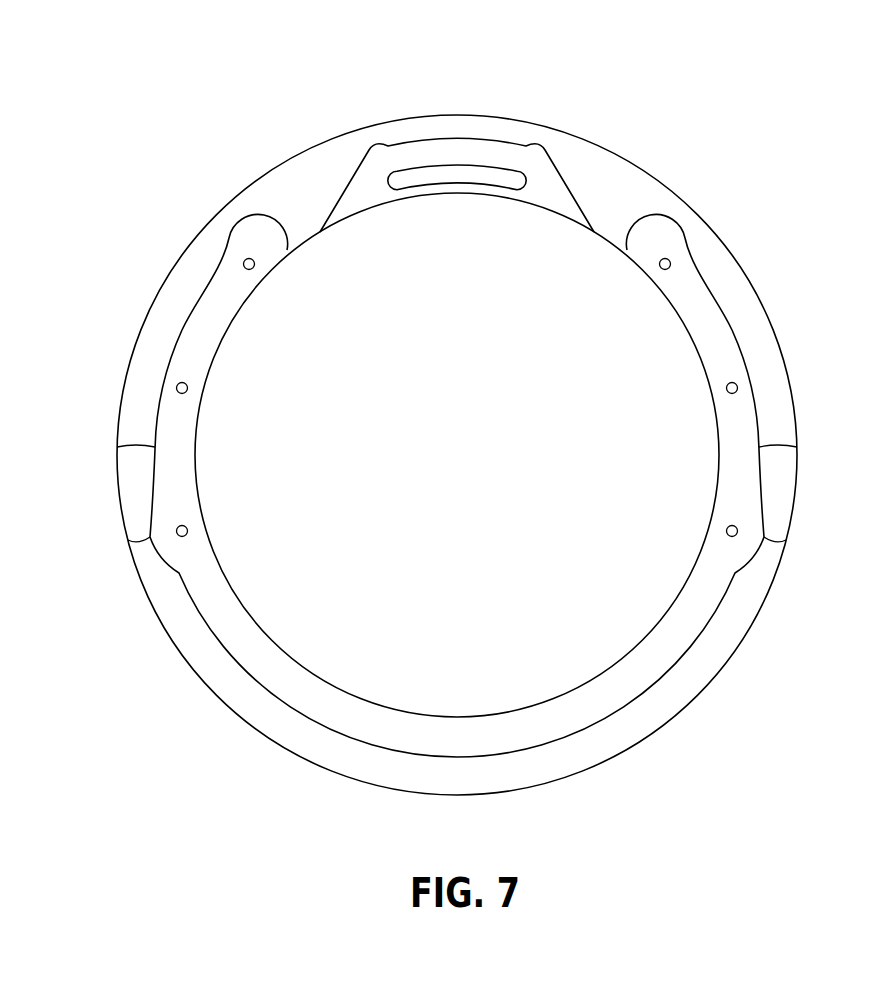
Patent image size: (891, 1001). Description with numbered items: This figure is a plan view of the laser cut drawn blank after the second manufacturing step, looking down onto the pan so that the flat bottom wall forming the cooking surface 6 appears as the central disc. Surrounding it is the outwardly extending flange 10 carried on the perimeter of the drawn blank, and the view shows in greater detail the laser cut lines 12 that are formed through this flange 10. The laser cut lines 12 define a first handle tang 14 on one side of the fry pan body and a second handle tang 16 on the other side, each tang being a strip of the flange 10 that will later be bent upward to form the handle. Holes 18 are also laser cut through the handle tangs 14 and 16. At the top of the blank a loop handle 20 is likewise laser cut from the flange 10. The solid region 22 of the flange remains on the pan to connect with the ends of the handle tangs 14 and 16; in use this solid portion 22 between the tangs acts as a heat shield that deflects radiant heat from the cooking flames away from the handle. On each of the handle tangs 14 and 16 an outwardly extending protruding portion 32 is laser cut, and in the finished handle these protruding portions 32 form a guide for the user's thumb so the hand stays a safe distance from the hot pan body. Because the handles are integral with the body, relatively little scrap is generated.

The cooking surface 6 is at (471, 463).
The flange 10 is at (198, 648).
The laser cut lines 12 is at (271, 218).
The first handle tang 14 is at (707, 318).
The second handle tang 16 is at (197, 330).
The holes 18 is at (253, 268).
The loop handle 20 is at (530, 160).
The solid region 22 is at (450, 738).
The outwardly extending protruding portion 32 is at (128, 540).